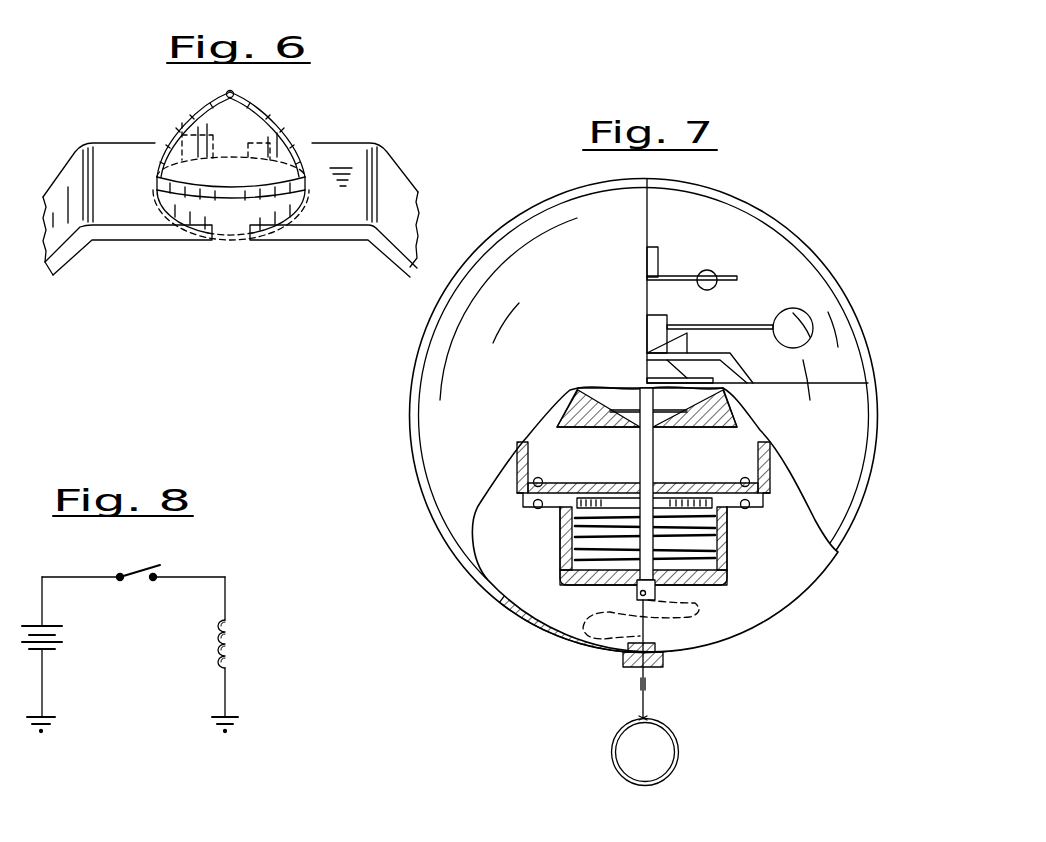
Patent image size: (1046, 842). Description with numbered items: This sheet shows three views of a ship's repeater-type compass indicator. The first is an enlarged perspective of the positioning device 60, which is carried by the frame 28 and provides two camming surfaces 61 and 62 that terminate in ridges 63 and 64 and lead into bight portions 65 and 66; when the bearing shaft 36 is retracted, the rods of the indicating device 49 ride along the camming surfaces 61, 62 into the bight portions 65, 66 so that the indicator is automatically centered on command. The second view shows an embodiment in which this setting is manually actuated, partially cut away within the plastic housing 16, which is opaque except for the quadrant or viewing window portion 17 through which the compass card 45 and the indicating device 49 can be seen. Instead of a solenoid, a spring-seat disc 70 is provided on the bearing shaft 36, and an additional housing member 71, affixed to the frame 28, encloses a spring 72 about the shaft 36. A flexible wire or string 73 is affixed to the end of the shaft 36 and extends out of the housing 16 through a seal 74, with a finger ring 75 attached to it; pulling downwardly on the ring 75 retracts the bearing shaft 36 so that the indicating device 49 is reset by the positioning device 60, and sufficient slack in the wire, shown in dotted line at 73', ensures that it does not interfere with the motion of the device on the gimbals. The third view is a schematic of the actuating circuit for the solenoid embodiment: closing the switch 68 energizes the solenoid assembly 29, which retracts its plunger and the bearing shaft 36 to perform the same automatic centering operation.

In FIG. 6, the frame 28 is at (70, 172).
In FIG. 6, the positioning device 60 is at (168, 100).
In FIG. 6, the camming surface 61 is at (287, 128).
In FIG. 6, the camming surface 62 is at (183, 128).
In FIG. 6, the ridge 63 is at (223, 188).
In FIG. 6, the ridge 64 is at (234, 95).
In FIG. 6, the bight portion 65 is at (307, 173).
In FIG. 6, the bight portion 66 is at (153, 176).
In FIG. 7, the housing 16 is at (750, 227).
In FIG. 7, the viewing window portion 17 is at (783, 267).
In FIG. 7, the compass card 45 is at (687, 273).
In FIG. 7, the indicating device 49 is at (793, 310).
In FIG. 7, the bearing shaft 36 is at (653, 455).
In FIG. 7, the spring-seat disc 70 is at (603, 505).
In FIG. 7, the housing member 71 is at (565, 542).
In FIG. 7, the spring 72 is at (707, 543).
In FIG. 7, the flexible wire or string 73 is at (609, 659).
In FIG. 7, the wire slack portion 73' is at (673, 614).
In FIG. 7, the seal 74 is at (657, 667).
In FIG. 7, the finger ring 75 is at (612, 743).
In FIG. 8, the switch 68 is at (133, 570).
In FIG. 8, the solenoid assembly 29 is at (233, 647).